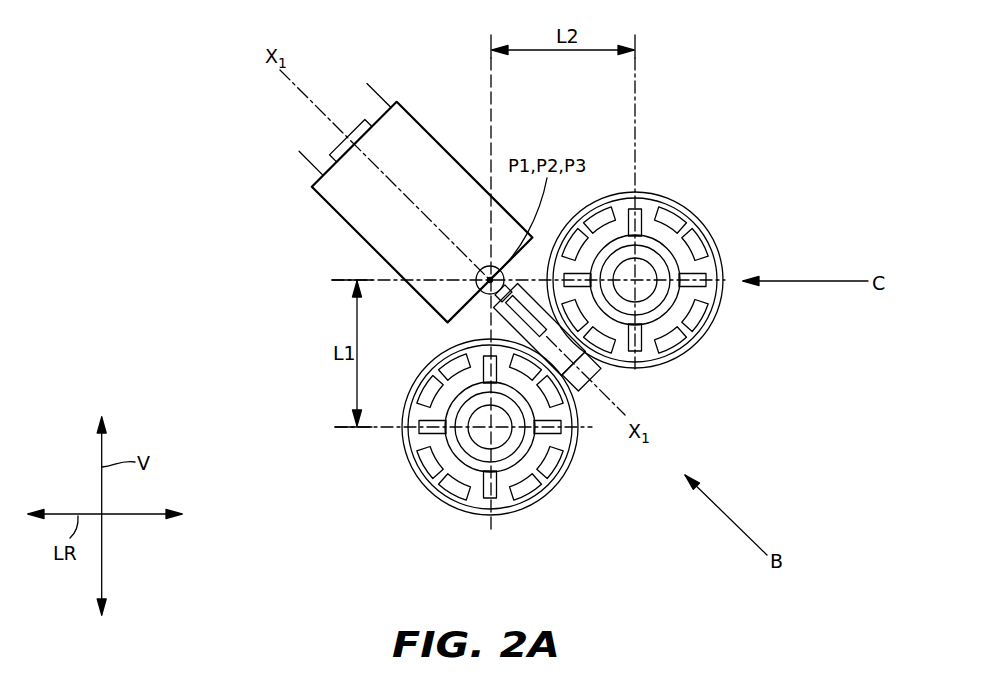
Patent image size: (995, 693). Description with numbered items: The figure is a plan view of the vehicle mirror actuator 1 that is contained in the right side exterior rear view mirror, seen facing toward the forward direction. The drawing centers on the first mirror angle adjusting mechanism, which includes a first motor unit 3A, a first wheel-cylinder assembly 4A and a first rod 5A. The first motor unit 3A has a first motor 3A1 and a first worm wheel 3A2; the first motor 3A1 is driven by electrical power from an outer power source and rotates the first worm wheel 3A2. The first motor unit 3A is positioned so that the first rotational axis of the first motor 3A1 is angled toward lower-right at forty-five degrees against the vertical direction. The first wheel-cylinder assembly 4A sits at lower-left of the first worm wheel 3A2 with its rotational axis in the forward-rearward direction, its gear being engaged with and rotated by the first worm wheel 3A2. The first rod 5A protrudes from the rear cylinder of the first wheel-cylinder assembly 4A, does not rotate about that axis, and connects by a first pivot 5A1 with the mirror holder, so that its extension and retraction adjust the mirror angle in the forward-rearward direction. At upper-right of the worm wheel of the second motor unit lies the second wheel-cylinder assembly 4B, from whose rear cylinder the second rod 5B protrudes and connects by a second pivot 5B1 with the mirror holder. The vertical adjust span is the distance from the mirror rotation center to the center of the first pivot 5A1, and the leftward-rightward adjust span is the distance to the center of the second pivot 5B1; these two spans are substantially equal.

The vehicle mirror actuator 1 is at (300, 138).
The first motor unit 3A is at (236, 162).
The first motor 3A1 is at (352, 221).
The first worm wheel 3A2 is at (488, 332).
The first wheel-cylinder assembly 4A is at (416, 448).
The first rod 5A is at (468, 444).
The first pivot 5A1 is at (483, 443).
The second wheel-cylinder assembly 4B is at (720, 310).
The second rod 5B is at (655, 298).
The second pivot 5B1 is at (642, 295).